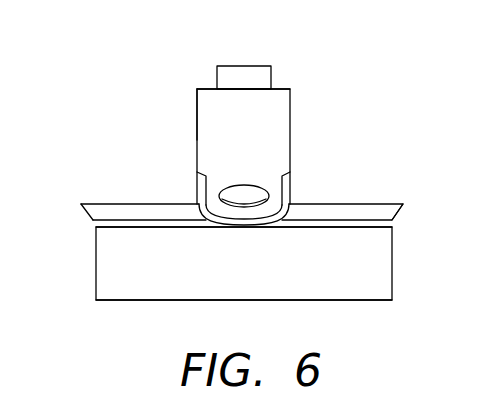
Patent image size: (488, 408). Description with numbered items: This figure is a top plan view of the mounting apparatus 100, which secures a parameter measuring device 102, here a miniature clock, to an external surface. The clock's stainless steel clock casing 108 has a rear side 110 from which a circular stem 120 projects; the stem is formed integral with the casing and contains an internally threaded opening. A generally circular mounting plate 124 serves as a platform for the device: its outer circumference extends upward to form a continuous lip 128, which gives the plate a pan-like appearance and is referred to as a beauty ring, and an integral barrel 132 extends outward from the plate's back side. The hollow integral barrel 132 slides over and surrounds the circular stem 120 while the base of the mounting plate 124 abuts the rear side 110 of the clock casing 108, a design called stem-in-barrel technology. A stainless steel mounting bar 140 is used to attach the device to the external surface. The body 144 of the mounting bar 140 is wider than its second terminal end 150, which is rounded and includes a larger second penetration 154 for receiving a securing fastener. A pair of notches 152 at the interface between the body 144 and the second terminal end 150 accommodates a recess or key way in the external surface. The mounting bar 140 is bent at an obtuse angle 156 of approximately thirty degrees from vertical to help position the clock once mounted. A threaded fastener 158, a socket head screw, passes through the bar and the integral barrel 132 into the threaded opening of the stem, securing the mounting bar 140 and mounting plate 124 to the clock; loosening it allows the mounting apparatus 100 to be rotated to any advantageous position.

The mounting apparatus 100 is at (176, 112).
The parameter measuring device 102 is at (142, 312).
The clock casing 108 is at (372, 265).
The rear side 110 is at (148, 226).
The circular stem 120 is at (271, 225).
The mounting plate 124 is at (92, 204).
The continuous lip 128 is at (405, 204).
The integral barrel 132 is at (197, 193).
The mounting bar 140 is at (276, 123).
The body 144 is at (275, 99).
The second terminal end 150 is at (243, 220).
The pair of notches 152 is at (283, 178).
The second penetration 154 is at (243, 197).
The obtuse angle 156 is at (197, 89).
The threaded fastener 158 is at (260, 65).